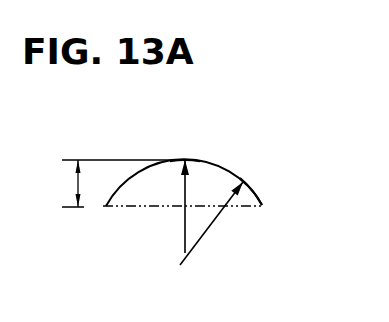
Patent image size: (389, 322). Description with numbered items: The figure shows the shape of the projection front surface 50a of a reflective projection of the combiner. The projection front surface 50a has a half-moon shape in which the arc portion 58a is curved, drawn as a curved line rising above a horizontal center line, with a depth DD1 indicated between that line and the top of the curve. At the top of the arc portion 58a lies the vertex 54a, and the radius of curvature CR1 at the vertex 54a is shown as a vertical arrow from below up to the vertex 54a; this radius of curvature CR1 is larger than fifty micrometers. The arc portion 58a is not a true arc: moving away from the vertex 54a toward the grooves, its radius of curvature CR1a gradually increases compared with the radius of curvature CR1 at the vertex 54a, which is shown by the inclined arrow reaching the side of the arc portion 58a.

The projection front surface 50a is at (231, 155).
The vertex 54a is at (185, 160).
The arc portion 58a is at (253, 194).
The depth DD1 is at (106, 183).
The radius of curvature CR1 is at (184, 190).
The radius of curvature CR1a is at (218, 220).